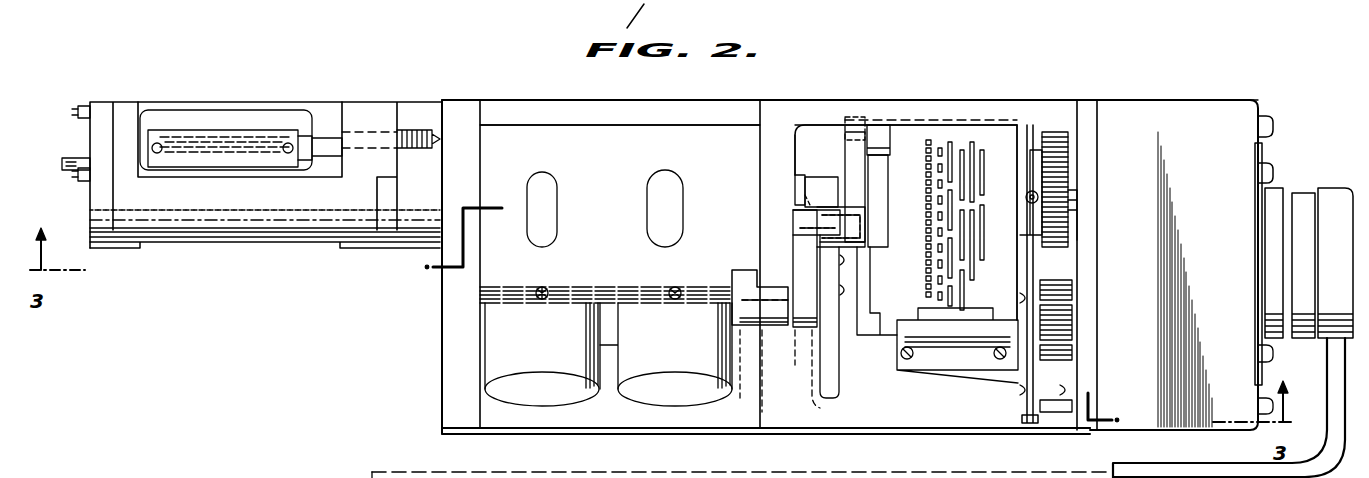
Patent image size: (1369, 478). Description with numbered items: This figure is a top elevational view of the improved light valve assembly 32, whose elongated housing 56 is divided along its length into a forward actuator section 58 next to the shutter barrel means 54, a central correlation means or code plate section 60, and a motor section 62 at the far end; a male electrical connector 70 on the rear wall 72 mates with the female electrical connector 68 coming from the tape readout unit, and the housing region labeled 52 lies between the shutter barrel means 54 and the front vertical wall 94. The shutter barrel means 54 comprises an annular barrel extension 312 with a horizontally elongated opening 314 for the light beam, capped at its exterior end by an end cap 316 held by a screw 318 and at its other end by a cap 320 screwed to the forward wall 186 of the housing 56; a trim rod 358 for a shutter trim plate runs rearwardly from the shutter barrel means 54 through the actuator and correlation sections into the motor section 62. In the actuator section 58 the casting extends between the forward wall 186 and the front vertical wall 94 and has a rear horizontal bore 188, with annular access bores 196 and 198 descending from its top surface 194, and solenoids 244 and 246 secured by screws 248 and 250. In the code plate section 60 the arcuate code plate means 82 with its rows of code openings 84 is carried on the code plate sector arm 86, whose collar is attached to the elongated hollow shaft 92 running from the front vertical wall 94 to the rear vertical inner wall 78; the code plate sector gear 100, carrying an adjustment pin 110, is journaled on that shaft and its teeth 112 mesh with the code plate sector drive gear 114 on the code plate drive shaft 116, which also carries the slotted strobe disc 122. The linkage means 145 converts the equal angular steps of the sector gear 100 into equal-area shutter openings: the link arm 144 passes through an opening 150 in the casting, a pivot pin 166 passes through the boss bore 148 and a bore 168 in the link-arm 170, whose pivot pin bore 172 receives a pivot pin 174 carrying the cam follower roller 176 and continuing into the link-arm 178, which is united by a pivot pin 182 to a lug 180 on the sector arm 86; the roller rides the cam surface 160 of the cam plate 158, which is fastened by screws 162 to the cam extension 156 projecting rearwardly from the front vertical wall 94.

The light valve assembly 32 is at (1023, 82).
The main housing section 52 is at (631, 146).
The shutter barrel means 54 is at (370, 103).
The elongated housing 56 is at (432, 409).
The actuator section 58 is at (605, 422).
The correlation means or central code plate section 60 is at (874, 432).
The motor section 62 is at (1144, 441).
The female electrical connector 68 is at (1346, 188).
The male electrical connector 70 is at (1274, 348).
The rear wall 72 is at (1262, 148).
The vertical inner wall 78 is at (1083, 310).
The code plate means 82 is at (1004, 142).
The code openings 84 is at (944, 146).
The code plate sector arm 86 is at (878, 316).
The elongated hollow shaft 92 is at (802, 200).
The front vertical wall 94 is at (760, 125).
The code plate sector gear 100 is at (1065, 147).
The adjustment pin 110 is at (1030, 224).
The teeth 112 is at (1056, 178).
The code plate sector drive gear 114 is at (1076, 332).
The code plate drive shaft 116 is at (1076, 358).
The strobe disc 122 is at (1022, 251).
The link arm 144 is at (733, 272).
The linkage means 145 is at (796, 168).
The bore 148 is at (762, 415).
The opening 150 is at (740, 392).
The cam extension 156 is at (812, 400).
The cam plate 158 is at (817, 392).
The cam surface 160 is at (841, 379).
The screws 162 is at (850, 320).
The pivot pin 166 is at (800, 282).
The bore 168 is at (797, 368).
The link-arm 170 is at (848, 250).
The pivot pin bore 172 is at (812, 232).
The pivot pin 174 is at (838, 177).
The cam follower roller 176 is at (845, 230).
The link-arm 178 is at (850, 205).
The lug 180 is at (895, 126).
The pivot pin 182 is at (858, 118).
The forward wall 186 is at (450, 330).
The rear horizontal bore 188 is at (880, 178).
The top surface 194 is at (609, 213).
The annular bore 196 is at (680, 186).
The annular bore 198 is at (540, 176).
The solenoid 244 is at (703, 352).
The solenoid 246 is at (570, 352).
The screw 248 is at (541, 287).
The screw 250 is at (675, 287).
The annular barrel extension 312 is at (258, 220).
The horizontally elongated opening 314 is at (302, 118).
The end cap 316 is at (95, 208).
The screw 318 is at (78, 113).
The cap 320 is at (425, 108).
The trim rod 358 is at (68, 156).